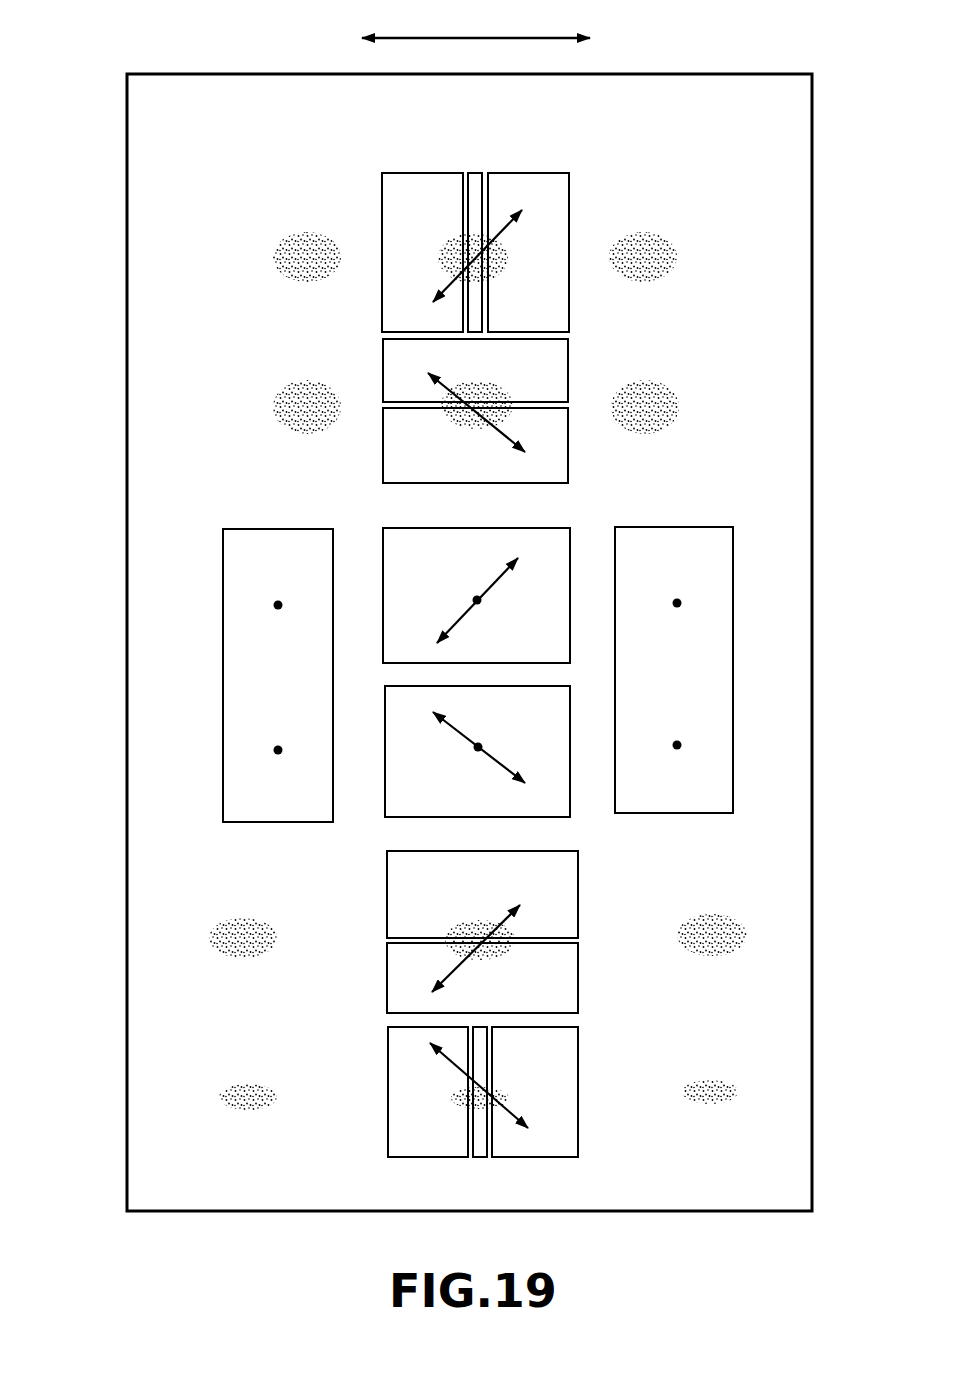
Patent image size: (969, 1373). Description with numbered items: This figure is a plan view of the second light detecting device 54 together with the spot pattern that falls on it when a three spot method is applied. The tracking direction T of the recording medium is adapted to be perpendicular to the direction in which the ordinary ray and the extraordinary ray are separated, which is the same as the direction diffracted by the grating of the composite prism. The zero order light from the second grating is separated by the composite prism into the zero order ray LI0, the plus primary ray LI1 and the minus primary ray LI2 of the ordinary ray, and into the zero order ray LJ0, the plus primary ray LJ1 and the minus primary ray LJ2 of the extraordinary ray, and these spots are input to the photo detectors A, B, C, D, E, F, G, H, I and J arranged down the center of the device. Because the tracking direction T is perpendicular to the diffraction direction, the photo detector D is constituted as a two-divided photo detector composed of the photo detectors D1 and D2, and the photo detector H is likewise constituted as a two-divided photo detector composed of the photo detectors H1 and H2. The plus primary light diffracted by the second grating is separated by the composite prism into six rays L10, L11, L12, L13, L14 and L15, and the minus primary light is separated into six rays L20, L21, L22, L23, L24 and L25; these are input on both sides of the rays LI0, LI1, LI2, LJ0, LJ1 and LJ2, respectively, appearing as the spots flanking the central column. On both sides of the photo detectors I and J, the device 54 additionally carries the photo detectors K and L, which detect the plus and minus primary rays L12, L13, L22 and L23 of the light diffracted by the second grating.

The second light detecting device 54 is at (650, 1213).
The tracking direction T is at (476, 26).
The photo detector A is at (427, 193).
The photo detector B is at (476, 187).
The photo detector C is at (537, 190).
The photo detector D is at (436, 431).
The photo detector D1 is at (397, 380).
The photo detector D2 is at (343, 435).
The photo detector E is at (539, 1147).
The photo detector F is at (478, 1152).
The photo detector G is at (435, 1147).
The photo detector H is at (523, 932).
The photo detector H1 is at (504, 978).
The photo detector H2 is at (563, 888).
The photo detector I is at (555, 568).
The photo detector J is at (552, 758).
The photo detector K is at (676, 545).
The photo detector L is at (255, 547).
The 0 order ray of the extraordinary ray LJ0 is at (477, 600).
The + primary ray of the extraordinary ray LJ1 is at (498, 258).
The − primary ray of the extraordinary ray LJ2 is at (458, 932).
The 0 order ray of the ordinary ray LI0 is at (478, 747).
The + primary ray of the ordinary ray LI1 is at (492, 392).
The − primary ray of the ordinary ray LI2 is at (470, 1100).
The ray L10 is at (662, 255).
The ray L11 is at (658, 403).
The ray L12 is at (677, 603).
The ray L13 is at (677, 745).
The ray L14 is at (723, 933).
The ray L15 is at (728, 1090).
The ray L20 is at (285, 263).
The ray L21 is at (293, 408).
The ray L22 is at (278, 605).
The ray L23 is at (278, 750).
The ray L24 is at (222, 943).
The ray L25 is at (225, 1098).